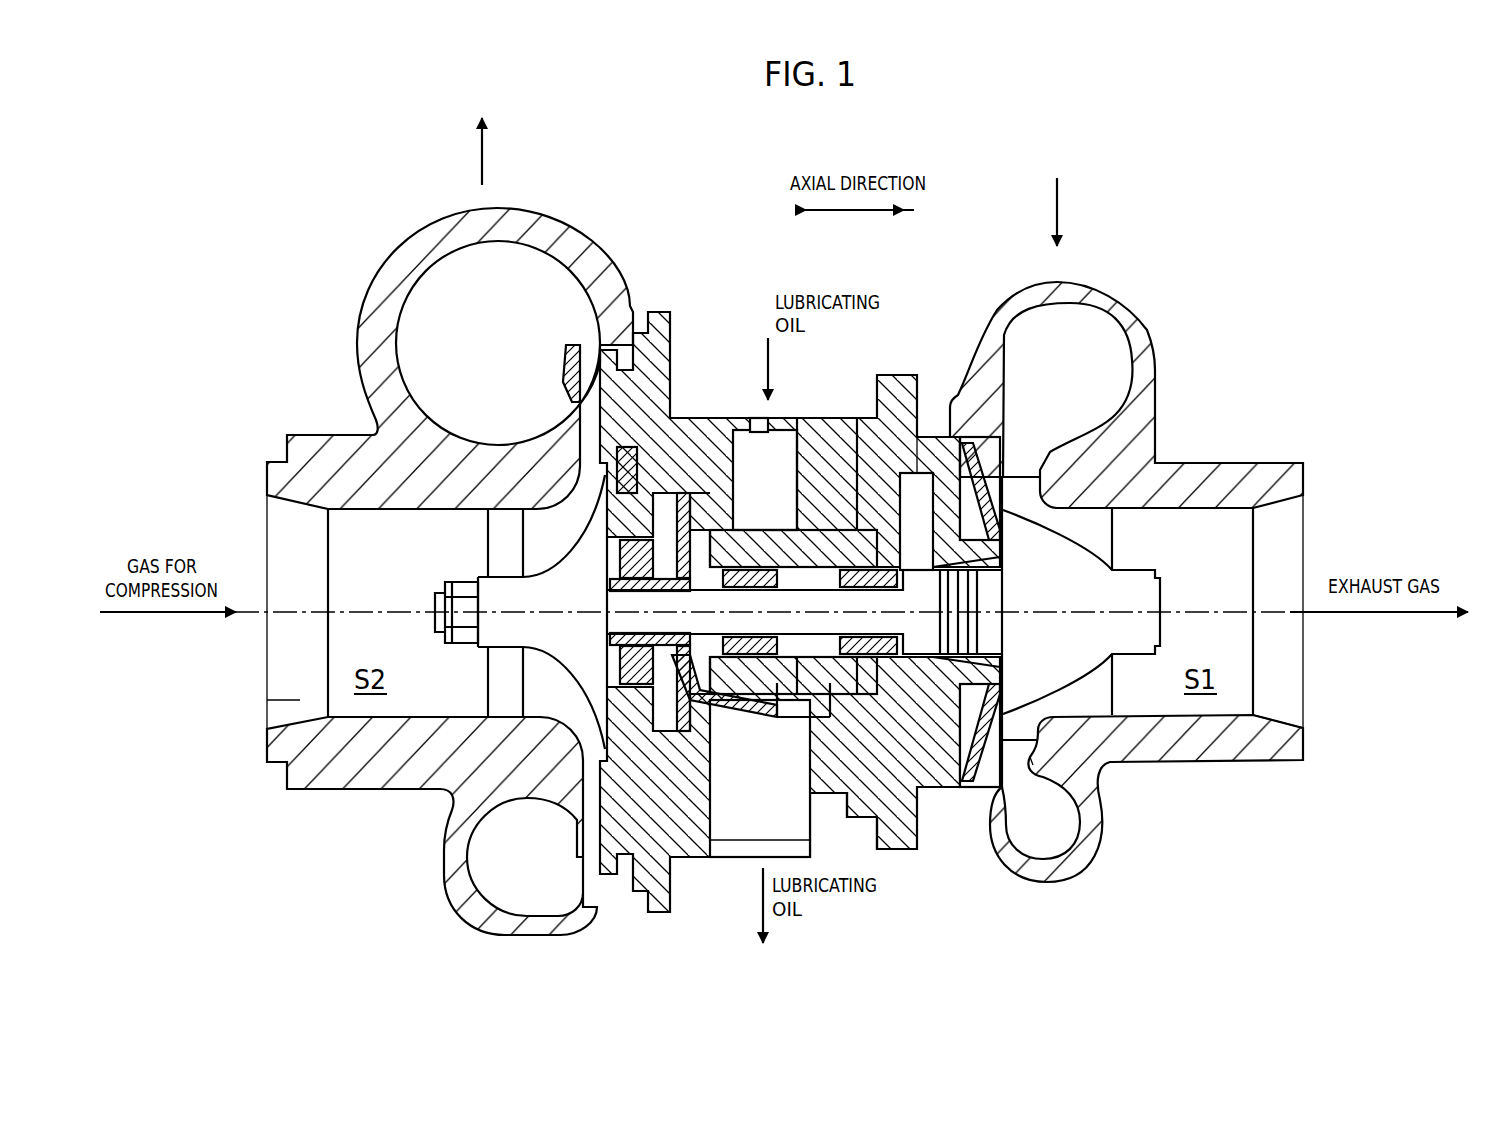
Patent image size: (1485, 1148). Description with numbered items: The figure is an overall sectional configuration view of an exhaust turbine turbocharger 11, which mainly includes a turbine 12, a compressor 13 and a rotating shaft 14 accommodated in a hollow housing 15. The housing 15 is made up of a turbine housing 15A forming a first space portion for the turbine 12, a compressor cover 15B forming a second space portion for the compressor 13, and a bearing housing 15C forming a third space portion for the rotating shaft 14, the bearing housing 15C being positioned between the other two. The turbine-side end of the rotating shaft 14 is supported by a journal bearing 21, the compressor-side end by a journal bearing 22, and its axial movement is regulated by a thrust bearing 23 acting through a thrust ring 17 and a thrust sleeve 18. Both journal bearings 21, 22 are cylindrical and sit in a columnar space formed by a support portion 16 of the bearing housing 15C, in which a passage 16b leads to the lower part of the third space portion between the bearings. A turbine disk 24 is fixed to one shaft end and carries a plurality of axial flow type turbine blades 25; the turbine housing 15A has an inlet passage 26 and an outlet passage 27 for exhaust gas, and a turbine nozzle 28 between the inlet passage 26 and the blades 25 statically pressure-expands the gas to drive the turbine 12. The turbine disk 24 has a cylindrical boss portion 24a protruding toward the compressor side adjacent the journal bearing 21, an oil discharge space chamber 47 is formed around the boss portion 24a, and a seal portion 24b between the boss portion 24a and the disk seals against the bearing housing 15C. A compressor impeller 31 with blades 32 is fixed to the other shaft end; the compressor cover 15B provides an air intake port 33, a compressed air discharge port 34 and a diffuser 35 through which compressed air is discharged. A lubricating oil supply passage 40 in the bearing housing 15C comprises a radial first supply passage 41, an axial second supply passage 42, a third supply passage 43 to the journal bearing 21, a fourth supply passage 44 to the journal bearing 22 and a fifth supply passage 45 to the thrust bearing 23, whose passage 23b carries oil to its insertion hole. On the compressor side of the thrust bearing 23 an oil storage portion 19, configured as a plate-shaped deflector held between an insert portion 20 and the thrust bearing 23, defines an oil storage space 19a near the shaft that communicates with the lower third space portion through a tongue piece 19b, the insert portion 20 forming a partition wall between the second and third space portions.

The exhaust turbine turbocharger 11 is at (1257, 278).
The turbine 12 is at (1284, 650).
The compressor 13 is at (292, 530).
The rotating shaft 14 is at (855, 820).
The housing 15 is at (707, 412).
The turbine housing 15A is at (1136, 303).
The compressor cover 15B is at (386, 264).
The bearing housing 15C is at (863, 410).
The support portion 16 is at (777, 690).
The passage 16b is at (892, 800).
The thrust ring 17 is at (693, 632).
The thrust sleeve 18 is at (613, 583).
The oil storage portion 19 is at (704, 840).
The oil storage space 19a is at (677, 540).
The tongue piece 19b is at (742, 812).
The insert portion 20 is at (570, 518).
The journal bearing 21 is at (955, 760).
The journal bearing 22 is at (813, 640).
The thrust bearing 23 is at (722, 540).
The passage 23b is at (700, 535).
The turbine disk 24 is at (1143, 560).
The boss portion 24a is at (947, 625).
The seal portion 24b is at (987, 762).
The turbine blades 25 is at (1113, 548).
The inlet passage 26 is at (1057, 214).
The outlet passage 27 is at (1258, 712).
The turbine nozzle 28 is at (1028, 457).
The compressor impeller 31 is at (500, 578).
The blades 32 is at (523, 675).
The air intake port 33 is at (292, 700).
The compressed air discharge port 34 is at (482, 150).
The diffuser 35 is at (590, 400).
The lubricating oil supply passage 40 is at (760, 443).
The first supply passage 41 is at (797, 440).
The second supply passage 42 is at (790, 537).
The third supply passage 43 is at (863, 560).
The fourth supply passage 44 is at (765, 480).
The fifth supply passage 45 is at (738, 555).
The oil discharge space chamber 47 is at (918, 588).